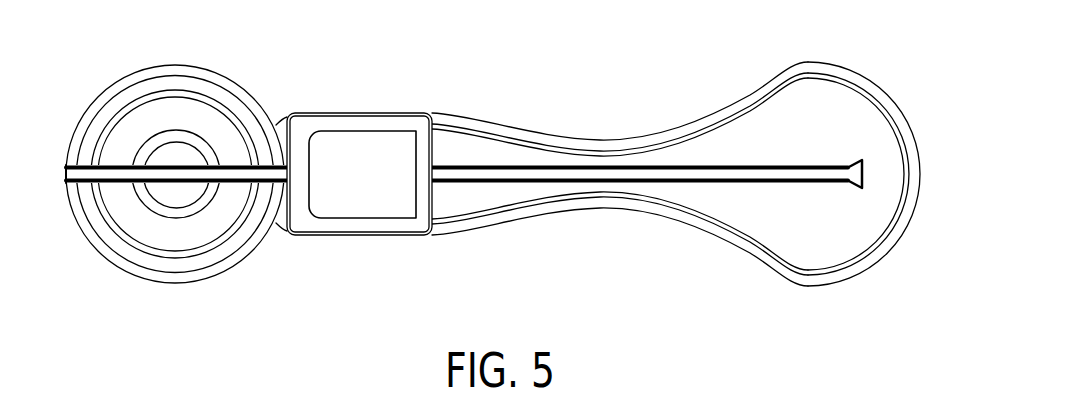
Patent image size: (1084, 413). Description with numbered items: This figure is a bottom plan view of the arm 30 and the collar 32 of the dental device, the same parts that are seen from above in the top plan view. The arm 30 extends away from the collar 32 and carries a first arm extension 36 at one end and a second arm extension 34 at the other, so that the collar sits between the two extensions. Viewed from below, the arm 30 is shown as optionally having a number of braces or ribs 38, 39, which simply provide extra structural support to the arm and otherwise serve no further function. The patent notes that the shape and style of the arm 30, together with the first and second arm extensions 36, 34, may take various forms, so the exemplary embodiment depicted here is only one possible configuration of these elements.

The arm 30 is at (577, 210).
The collar 32 is at (360, 120).
The second arm extension 34 is at (128, 273).
The first arm extension 36 is at (887, 93).
The brace or rib 38 is at (227, 183).
The brace or rib 39 is at (730, 181).